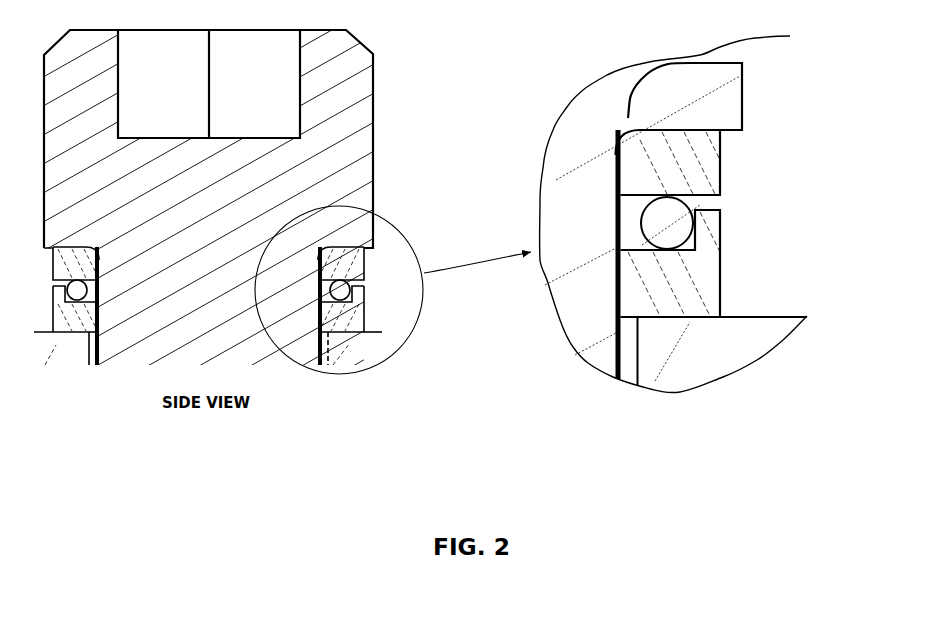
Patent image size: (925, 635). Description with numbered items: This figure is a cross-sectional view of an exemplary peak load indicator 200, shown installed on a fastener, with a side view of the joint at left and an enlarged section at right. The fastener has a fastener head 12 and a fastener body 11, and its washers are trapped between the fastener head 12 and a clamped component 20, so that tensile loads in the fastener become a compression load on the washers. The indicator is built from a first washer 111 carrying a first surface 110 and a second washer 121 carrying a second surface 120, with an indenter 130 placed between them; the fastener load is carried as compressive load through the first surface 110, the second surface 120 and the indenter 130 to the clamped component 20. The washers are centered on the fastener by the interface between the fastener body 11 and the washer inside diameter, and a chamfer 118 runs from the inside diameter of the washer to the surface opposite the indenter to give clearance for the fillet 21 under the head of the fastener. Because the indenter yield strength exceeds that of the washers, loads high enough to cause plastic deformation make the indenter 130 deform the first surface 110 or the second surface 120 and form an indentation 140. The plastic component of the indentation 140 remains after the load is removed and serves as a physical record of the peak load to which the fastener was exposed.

The fastener head 12 is at (378, 97).
The fastener body 11 is at (326, 344).
The peak load indicator 200 is at (617, 412).
The fillet 21 is at (715, 78).
The chamfer 118 is at (649, 142).
The first surface 110 is at (626, 203).
The first washer 111 is at (724, 168).
The indenter 130 is at (696, 207).
The second surface 120 is at (629, 243).
The second washer 121 is at (727, 251).
The indentation 140 is at (662, 260).
The clamped component 20 is at (750, 311).